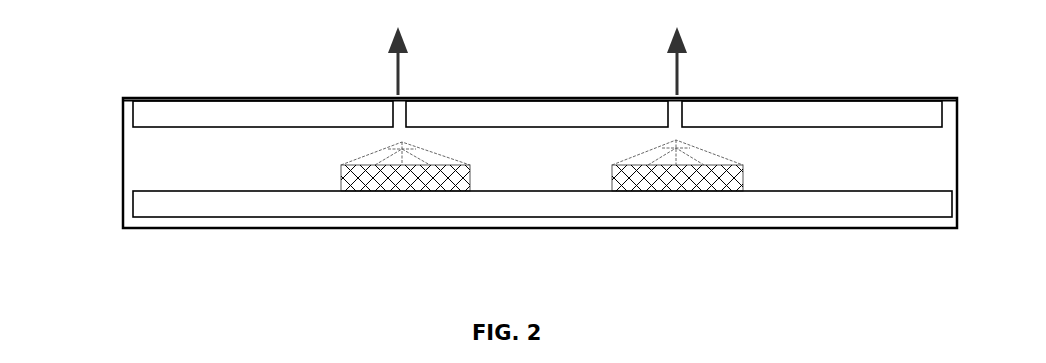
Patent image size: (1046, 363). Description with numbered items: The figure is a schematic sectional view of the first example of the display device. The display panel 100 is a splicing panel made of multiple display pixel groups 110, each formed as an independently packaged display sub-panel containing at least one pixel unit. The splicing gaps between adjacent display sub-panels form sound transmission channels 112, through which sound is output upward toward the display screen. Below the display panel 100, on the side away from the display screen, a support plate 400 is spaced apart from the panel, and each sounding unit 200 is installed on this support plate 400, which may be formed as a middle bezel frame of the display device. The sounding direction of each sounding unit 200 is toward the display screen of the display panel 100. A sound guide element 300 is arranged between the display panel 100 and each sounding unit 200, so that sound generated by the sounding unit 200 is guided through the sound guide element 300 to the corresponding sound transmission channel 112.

The display panel 100 is at (137, 118).
The display pixel group 110 is at (247, 104).
The sound transmission channel 112 is at (386, 88).
The sounding unit 200 is at (392, 192).
The sound guide element 300 is at (410, 140).
The support plate 400 is at (911, 191).